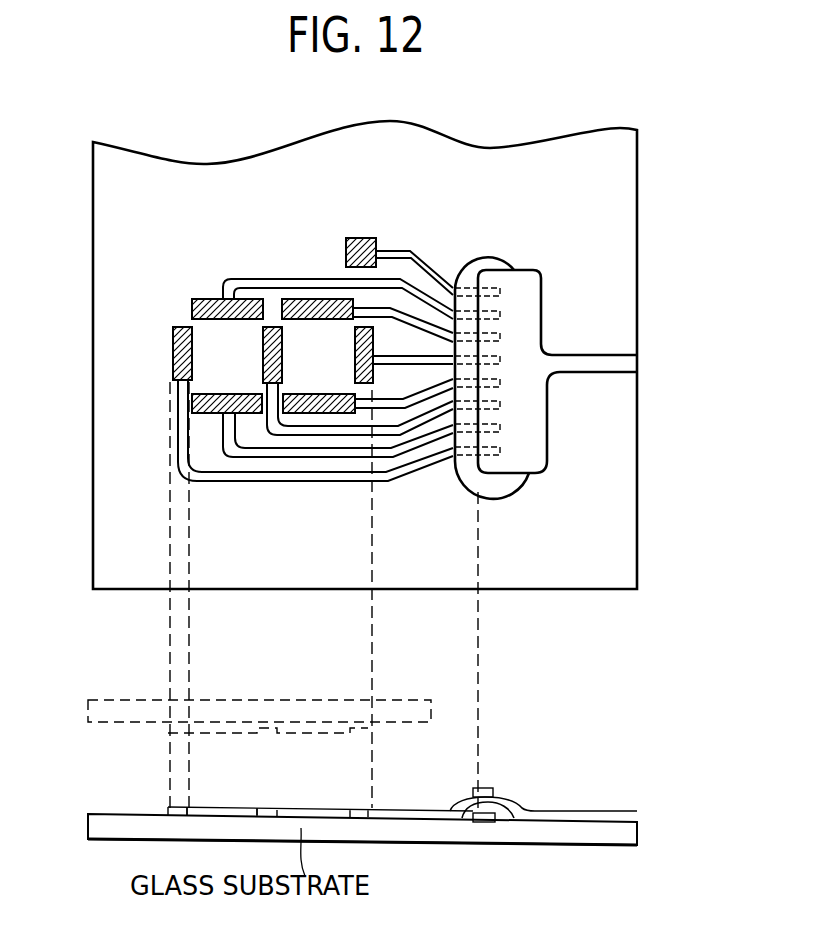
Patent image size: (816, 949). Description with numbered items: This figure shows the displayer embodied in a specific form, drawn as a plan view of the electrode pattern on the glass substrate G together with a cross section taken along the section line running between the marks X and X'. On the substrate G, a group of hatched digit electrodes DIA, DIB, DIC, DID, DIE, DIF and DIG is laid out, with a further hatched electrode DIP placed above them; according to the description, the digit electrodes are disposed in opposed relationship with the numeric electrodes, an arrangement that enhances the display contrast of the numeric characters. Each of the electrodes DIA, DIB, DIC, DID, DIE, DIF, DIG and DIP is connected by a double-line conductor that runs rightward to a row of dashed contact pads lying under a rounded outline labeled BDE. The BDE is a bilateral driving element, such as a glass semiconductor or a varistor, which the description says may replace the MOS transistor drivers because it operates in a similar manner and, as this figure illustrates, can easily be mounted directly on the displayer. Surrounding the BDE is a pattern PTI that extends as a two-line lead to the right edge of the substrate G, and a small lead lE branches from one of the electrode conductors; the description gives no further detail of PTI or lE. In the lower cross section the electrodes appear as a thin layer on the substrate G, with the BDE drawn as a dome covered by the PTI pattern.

The glass substrate panel G is at (637, 545).
The section line X is at (49, 408).
The section line X' is at (683, 418).
The digit electrode DIA is at (173, 345).
The digit electrode DIB is at (220, 299).
The digit electrode DIC is at (313, 299).
The digit electrode DID is at (373, 377).
The digit electrode DIE is at (297, 394).
The digit electrode DIF is at (228, 394).
The digit electrode DIG is at (282, 340).
The display electrode terminal P DIP is at (360, 238).
The lead electrode lE is at (385, 408).
The bilateral driving element BDE is at (492, 258).
The pattern terminal interconnection PTI is at (530, 298).